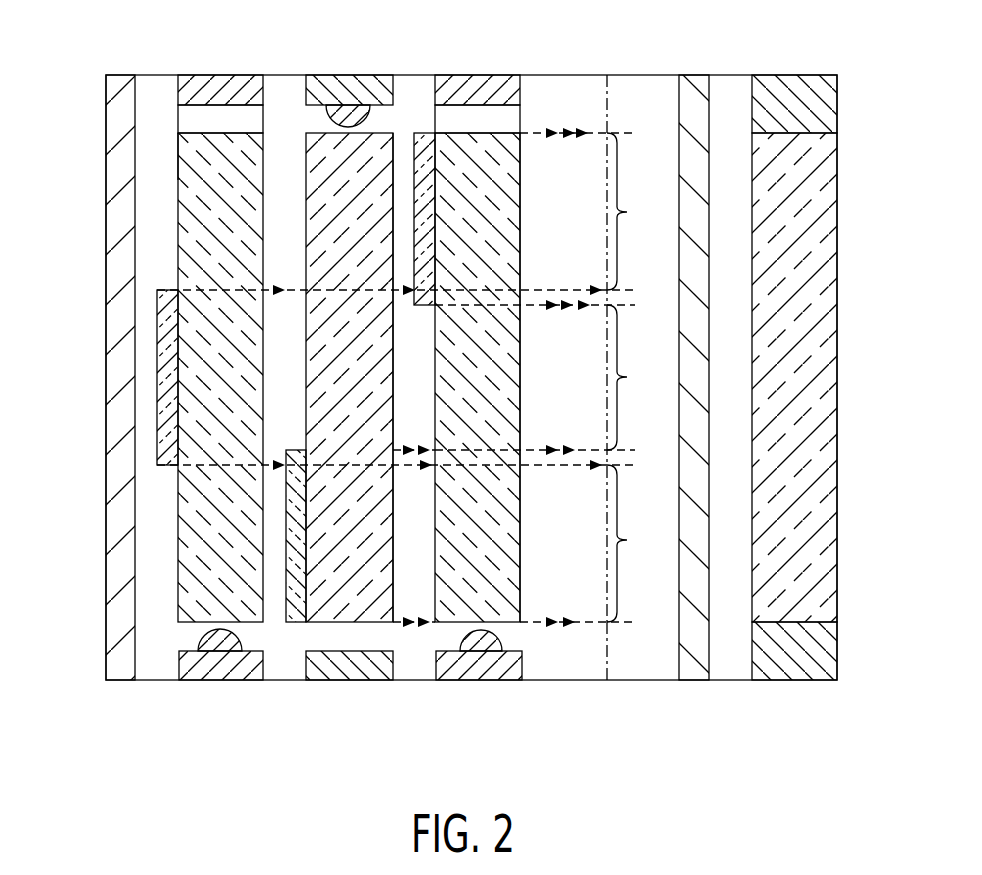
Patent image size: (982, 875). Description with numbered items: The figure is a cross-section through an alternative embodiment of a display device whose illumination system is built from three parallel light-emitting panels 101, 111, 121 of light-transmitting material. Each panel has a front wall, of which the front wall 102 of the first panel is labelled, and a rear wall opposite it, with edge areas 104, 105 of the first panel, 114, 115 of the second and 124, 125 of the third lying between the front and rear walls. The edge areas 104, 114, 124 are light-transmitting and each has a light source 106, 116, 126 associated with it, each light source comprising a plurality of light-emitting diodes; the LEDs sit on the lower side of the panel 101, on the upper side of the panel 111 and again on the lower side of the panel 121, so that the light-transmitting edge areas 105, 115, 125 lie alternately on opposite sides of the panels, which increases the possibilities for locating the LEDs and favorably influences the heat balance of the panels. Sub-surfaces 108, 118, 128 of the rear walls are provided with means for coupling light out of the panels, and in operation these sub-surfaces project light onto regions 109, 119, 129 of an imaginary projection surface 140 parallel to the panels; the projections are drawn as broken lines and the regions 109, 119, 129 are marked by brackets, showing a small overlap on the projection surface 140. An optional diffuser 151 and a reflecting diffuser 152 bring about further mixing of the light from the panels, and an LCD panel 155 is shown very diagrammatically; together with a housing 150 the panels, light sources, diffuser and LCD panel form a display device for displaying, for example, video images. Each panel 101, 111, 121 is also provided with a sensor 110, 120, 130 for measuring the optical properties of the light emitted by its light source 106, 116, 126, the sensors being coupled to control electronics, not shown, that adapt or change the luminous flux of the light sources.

The light-emitting panel 101 is at (161, 378).
The front wall 102 is at (268, 145).
The edge area 104 is at (182, 615).
The edge area 105 is at (180, 150).
The light source 106 is at (195, 640).
The sub-surface 108 is at (170, 425).
The projected region 109 is at (635, 377).
The sensor 110 is at (200, 123).
The light-emitting panel 111 is at (351, 378).
The edge area 114 is at (393, 137).
The edge area 115 is at (393, 605).
The light source 116 is at (320, 112).
The sub-surface 118 is at (310, 615).
The projected region 119 is at (635, 543).
The sensor 120 is at (382, 638).
The light-emitting panel 121 is at (493, 378).
The edge area 124 is at (520, 605).
The edge area 125 is at (523, 150).
The light source 126 is at (503, 638).
The sub-surface 128 is at (438, 145).
The projected region 129 is at (635, 211).
The sensor 130 is at (495, 117).
The imaginary projection surface 140 is at (608, 645).
The housing 150 is at (608, 75).
The diffuser 151 is at (685, 117).
The reflecting diffuser 152 is at (110, 535).
The LCD panel 155 is at (825, 270).